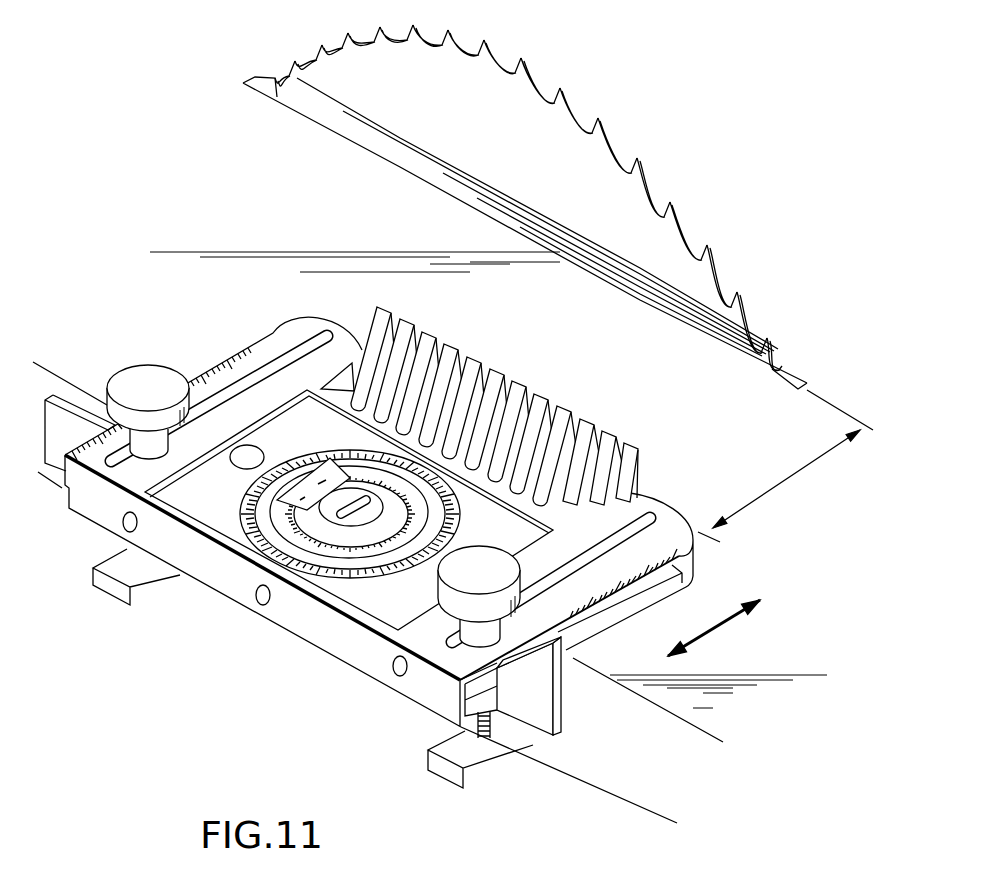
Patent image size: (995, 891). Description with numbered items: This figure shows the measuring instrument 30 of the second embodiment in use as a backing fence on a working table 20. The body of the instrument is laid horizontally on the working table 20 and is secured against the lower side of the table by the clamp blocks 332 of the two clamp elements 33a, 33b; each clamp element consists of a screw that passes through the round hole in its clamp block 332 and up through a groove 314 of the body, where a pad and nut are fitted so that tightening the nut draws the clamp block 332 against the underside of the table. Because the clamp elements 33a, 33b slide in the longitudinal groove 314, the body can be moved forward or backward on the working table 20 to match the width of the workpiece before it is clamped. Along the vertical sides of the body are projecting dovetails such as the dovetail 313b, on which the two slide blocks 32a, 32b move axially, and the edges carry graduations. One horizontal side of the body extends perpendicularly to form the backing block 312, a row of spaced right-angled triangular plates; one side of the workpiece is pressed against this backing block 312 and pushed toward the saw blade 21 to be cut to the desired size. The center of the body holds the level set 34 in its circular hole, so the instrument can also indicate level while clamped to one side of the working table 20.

The working table 20 is at (637, 785).
The saw blade 21 is at (630, 208).
The measuring instrument 30 is at (295, 627).
The backing block 312 is at (517, 382).
The projecting dovetail 313b is at (632, 604).
The groove 314 is at (650, 512).
The slide block 32a is at (62, 398).
The slide block 32b is at (545, 712).
The clamp element 33a is at (163, 378).
The clamp element 33b is at (495, 568).
The clamp block 332 is at (443, 772).
The level set 34 is at (373, 535).